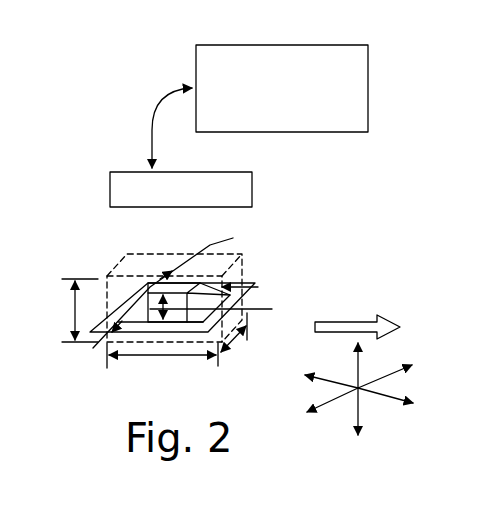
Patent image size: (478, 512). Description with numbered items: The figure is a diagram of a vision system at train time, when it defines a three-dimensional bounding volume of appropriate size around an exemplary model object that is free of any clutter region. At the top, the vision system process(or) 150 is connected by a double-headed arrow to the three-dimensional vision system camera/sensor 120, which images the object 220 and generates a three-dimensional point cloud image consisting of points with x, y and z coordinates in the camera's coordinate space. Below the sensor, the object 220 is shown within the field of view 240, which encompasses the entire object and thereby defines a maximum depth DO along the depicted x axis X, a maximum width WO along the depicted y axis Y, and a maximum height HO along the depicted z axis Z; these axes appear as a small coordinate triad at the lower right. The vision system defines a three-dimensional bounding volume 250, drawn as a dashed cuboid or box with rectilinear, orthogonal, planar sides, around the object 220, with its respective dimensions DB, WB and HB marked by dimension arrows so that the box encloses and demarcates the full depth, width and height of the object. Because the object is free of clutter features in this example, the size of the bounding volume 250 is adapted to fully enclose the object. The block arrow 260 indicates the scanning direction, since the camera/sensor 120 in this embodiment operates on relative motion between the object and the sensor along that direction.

The vision system process(or) 150 is at (278, 46).
The 3D vision system camera/sensor 120 is at (256, 189).
The object 220 is at (153, 281).
The 3D bounding volume 250 is at (155, 257).
The field of view 240 is at (208, 332).
The scanning direction arrow 260 is at (347, 320).
The bounding volume height HB is at (72, 312).
The bounding volume width WB is at (157, 358).
The bounding volume depth DB is at (233, 350).
The object maximum height HO is at (250, 309).
The object maximum width WO is at (258, 287).
The object maximum depth DO is at (175, 283).
The x axis X is at (337, 400).
The y axis Y is at (393, 390).
The z axis Z is at (362, 412).